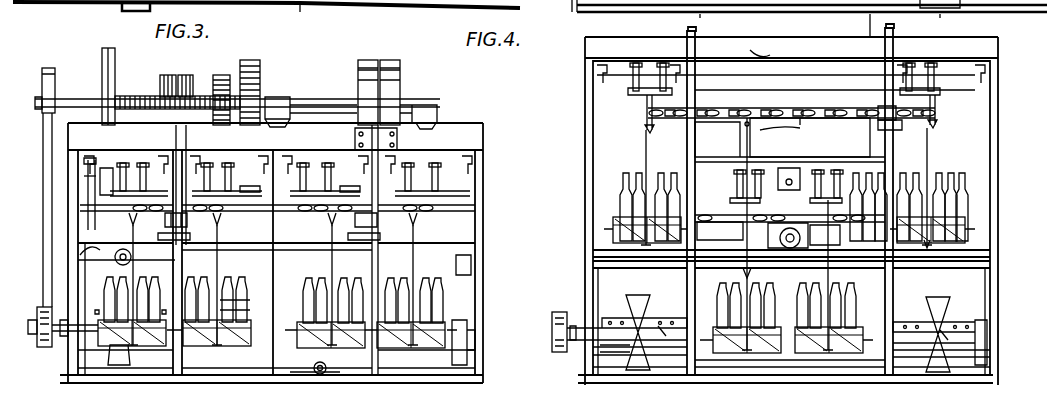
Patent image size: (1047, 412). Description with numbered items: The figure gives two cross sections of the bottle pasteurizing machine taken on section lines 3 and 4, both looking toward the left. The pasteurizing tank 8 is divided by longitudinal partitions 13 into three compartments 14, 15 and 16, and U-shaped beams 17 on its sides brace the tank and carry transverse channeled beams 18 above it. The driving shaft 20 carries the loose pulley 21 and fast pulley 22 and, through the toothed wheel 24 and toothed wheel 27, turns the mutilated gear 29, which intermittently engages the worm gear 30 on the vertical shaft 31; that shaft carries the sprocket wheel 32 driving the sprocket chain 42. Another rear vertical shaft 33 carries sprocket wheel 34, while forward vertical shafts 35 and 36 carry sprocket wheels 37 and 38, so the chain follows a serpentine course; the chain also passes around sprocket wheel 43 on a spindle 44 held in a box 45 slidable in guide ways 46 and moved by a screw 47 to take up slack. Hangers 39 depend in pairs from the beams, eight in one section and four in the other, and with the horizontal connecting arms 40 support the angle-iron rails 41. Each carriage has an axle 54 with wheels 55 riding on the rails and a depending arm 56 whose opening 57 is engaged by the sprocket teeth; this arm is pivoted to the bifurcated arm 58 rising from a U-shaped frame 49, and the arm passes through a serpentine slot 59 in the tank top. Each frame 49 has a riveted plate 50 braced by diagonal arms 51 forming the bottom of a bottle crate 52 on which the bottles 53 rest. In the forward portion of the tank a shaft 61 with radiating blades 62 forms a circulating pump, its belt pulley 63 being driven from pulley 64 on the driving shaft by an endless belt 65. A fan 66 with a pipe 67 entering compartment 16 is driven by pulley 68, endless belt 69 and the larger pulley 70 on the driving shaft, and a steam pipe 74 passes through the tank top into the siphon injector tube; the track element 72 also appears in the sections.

In FIG. 4, the section line 3 is at (875, 25).
In FIG. 3, the section line 4 is at (290, 19).
In FIG. 3, the pasteurizing tank 8 is at (385, 12).
In FIG. 4, the pasteurizing tank 8 is at (998, 298).
In FIG. 3, the longitudinal partitions 13 is at (276, 262).
In FIG. 4, the longitudinal partitions 13 is at (748, 48).
In FIG. 3, the compartment 14 is at (78, 266).
In FIG. 4, the compartment 14 is at (593, 272).
In FIG. 3, the compartment 15 is at (277, 260).
In FIG. 4, the compartment 15 is at (830, 326).
In FIG. 3, the compartment 16 is at (460, 273).
In FIG. 4, the compartment 16 is at (970, 278).
In FIG. 3, the beams 17 is at (68, 196).
In FIG. 4, the beams 17 is at (585, 168).
In FIG. 3, the transverse channeled beams 18 is at (303, 125).
In FIG. 4, the transverse channeled beams 18 is at (765, 50).
In FIG. 3, the driving shaft 20 is at (333, 118).
In FIG. 3, the loose pulley 21 is at (400, 78).
In FIG. 3, the fast pulley 22 is at (378, 62).
In FIG. 3, the toothed wheel 24 is at (220, 75).
In FIG. 3, the toothed wheel 27 is at (260, 66).
In FIG. 3, the mutilated gear 29 is at (168, 75).
In FIG. 3, the worm gear 30 is at (140, 96).
In FIG. 3, the vertical shaft 31 is at (187, 75).
In FIG. 3, the sprocket wheel 32 is at (180, 226).
In FIG. 3, the vertical shaft 33 is at (378, 204).
In FIG. 3, the sprocket wheel 34 is at (375, 226).
In FIG. 4, the vertical shaft 35 is at (790, 142).
In FIG. 4, the vertical shaft 36 is at (893, 145).
In FIG. 4, the sprocket wheel 37 is at (791, 105).
In FIG. 4, the sprocket wheel 38 is at (878, 108).
In FIG. 3, the hangers 39 is at (150, 156).
In FIG. 4, the hangers 39 is at (633, 80).
In FIG. 3, the horizontal connecting arms 40 is at (300, 192).
In FIG. 3, the rails 41 is at (236, 201).
In FIG. 4, the rails 41 is at (640, 100).
In FIG. 4, the sprocket chain 42 is at (803, 127).
In FIG. 4, the sprocket wheel 43 is at (720, 231).
In FIG. 4, the spindle 44 is at (780, 179).
In FIG. 3, the box 45 is at (243, 293).
In FIG. 4, the guide ways 46 is at (785, 260).
In FIG. 4, the screw 47 is at (813, 261).
In FIG. 3, the U-shaped frame 49 is at (455, 270).
In FIG. 4, the U-shaped frame 49 is at (620, 196).
In FIG. 3, the plate 50 is at (241, 368).
In FIG. 3, the diagonal arms 51 is at (55, 380).
In FIG. 4, the diagonal arms 51 is at (645, 243).
In FIG. 3, the bottle crate 52 is at (252, 329).
In FIG. 4, the bottle crate 52 is at (604, 226).
In FIG. 3, the bottles 53 is at (380, 270).
In FIG. 4, the bottles 53 is at (660, 175).
In FIG. 3, the axle 54 is at (410, 163).
In FIG. 4, the axle 54 is at (625, 92).
In FIG. 3, the wheels 55 is at (425, 163).
In FIG. 4, the wheels 55 is at (644, 63).
In FIG. 3, the arm 56 is at (277, 181).
In FIG. 4, the arm 56 is at (810, 124).
In FIG. 3, the opening 57 is at (277, 219).
In FIG. 4, the opening 57 is at (750, 122).
In FIG. 3, the arm 58 is at (150, 266).
In FIG. 4, the arm 58 is at (646, 146).
In FIG. 3, the serpentine slot 59 is at (284, 225).
In FIG. 4, the serpentine slot 59 is at (841, 259).
In FIG. 3, the shaft 61 is at (23, 343).
In FIG. 4, the shaft 61 is at (615, 352).
In FIG. 3, the blades 62 is at (467, 355).
In FIG. 4, the blades 62 is at (956, 308).
In FIG. 3, the belt pulley 63 is at (37, 333).
In FIG. 4, the belt pulley 63 is at (552, 327).
In FIG. 3, the pulley 64 is at (42, 72).
In FIG. 3, the endless belt 65 is at (46, 140).
In FIG. 3, the fan 66 is at (84, 180).
In FIG. 3, the pipe 67 is at (105, 260).
In FIG. 3, the pulley 68 is at (97, 207).
In FIG. 3, the endless belt 69 is at (84, 160).
In FIG. 3, the pulley 70 is at (102, 52).
In FIG. 3, the roller track 72 is at (311, 371).
In FIG. 3, the steam pipe 74 is at (330, 370).